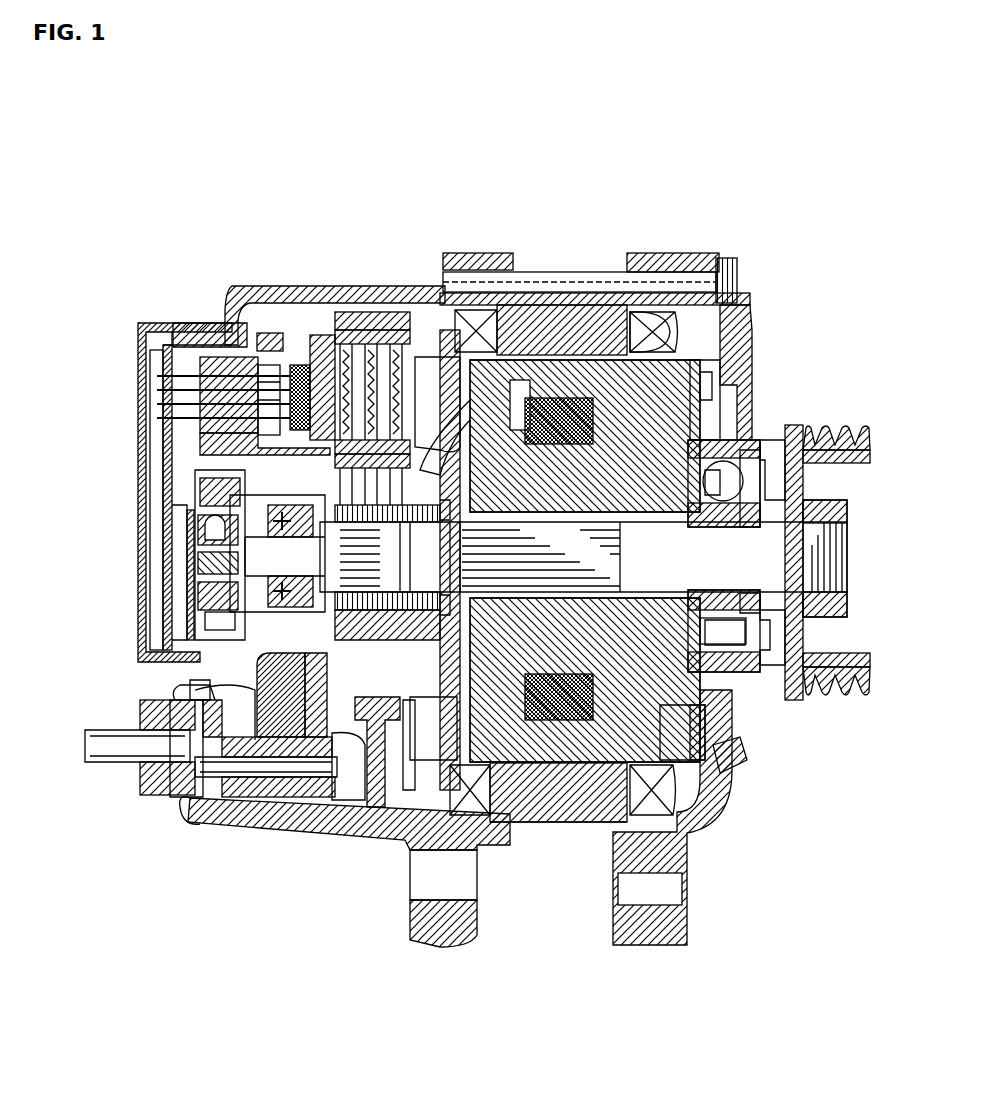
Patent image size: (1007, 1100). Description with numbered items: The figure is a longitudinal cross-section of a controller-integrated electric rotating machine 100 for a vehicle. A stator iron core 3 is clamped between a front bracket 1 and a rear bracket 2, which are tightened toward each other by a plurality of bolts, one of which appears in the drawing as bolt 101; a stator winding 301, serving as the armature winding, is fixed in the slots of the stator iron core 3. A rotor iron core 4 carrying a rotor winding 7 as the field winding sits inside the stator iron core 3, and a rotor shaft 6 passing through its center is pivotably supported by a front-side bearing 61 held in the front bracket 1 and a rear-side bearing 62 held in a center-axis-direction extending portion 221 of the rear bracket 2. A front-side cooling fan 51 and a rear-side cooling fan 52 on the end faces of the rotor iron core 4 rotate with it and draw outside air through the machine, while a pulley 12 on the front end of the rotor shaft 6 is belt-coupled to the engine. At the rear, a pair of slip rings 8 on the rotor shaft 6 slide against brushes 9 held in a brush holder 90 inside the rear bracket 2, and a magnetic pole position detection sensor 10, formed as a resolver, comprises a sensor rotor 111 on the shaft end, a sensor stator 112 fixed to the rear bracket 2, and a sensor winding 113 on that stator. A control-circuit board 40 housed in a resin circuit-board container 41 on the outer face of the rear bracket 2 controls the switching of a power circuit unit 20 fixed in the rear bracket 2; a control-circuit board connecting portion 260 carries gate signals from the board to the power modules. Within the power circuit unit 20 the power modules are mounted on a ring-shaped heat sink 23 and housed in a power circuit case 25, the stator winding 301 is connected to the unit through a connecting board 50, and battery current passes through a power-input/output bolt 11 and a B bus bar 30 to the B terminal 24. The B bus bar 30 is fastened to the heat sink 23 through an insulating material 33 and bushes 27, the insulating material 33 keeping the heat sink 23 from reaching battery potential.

The controller-integrated electric rotating machine 100 is at (471, 120).
The front bracket 1 is at (745, 355).
The rear bracket 2 is at (430, 290).
The stator iron core 3 is at (557, 823).
The rotor iron core 4 is at (625, 345).
The rotor shaft 6 is at (740, 700).
The rotor winding 7 is at (580, 380).
The slip rings 8 is at (385, 290).
The brushes 9 is at (340, 290).
The magnetic pole position detection sensor 10 is at (180, 515).
The power-input/output bolt 11 is at (135, 740).
The pulley 12 is at (812, 428).
The power circuit unit 20 is at (268, 300).
The heat sink 23 is at (305, 790).
The B terminal 24 is at (195, 690).
The power circuit case 25 is at (292, 795).
The bush 27 is at (268, 815).
The B bus bar 30 is at (200, 810).
The insulating material 33 is at (340, 795).
The control-circuit board 40 is at (145, 440).
The circuit-board container 41 is at (147, 320).
The connecting board 50 is at (390, 820).
The front-side cooling fan 51 is at (720, 268).
The rear-side cooling fan 52 is at (485, 305).
The front-side bearing 61 is at (720, 660).
The rear-side bearing 62 is at (155, 520).
The brush holder 90 is at (362, 290).
The through bolt 101 is at (643, 283).
The sensor rotor 111 is at (200, 580).
The sensor stator 112 is at (200, 597).
The sensor winding 113 is at (200, 612).
The center-axis-direction extending portion 221 is at (180, 505).
The control-circuit board connecting portion 260 is at (215, 320).
The stator winding 301 is at (665, 322).